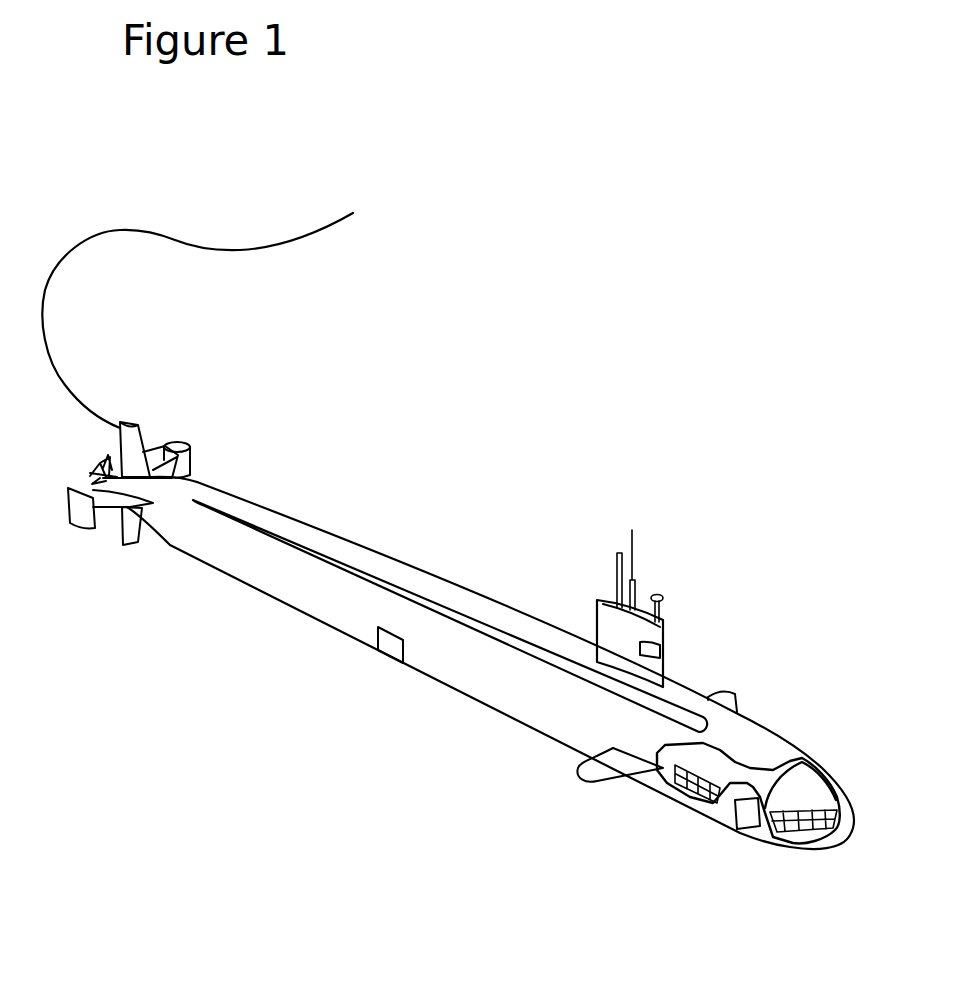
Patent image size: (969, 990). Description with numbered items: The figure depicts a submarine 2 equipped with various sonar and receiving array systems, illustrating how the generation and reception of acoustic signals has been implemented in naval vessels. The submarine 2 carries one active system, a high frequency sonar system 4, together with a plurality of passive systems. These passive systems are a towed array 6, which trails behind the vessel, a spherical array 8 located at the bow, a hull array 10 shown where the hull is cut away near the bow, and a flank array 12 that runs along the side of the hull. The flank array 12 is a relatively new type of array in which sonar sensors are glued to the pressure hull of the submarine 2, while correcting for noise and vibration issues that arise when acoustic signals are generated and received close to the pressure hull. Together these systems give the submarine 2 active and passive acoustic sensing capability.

The submarine 2 is at (525, 339).
The high frequency sonar system 4 is at (662, 648).
The towed array 6 is at (190, 250).
The spherical array 8 is at (808, 782).
The hull array 10 is at (692, 793).
The flank array 12 is at (317, 560).